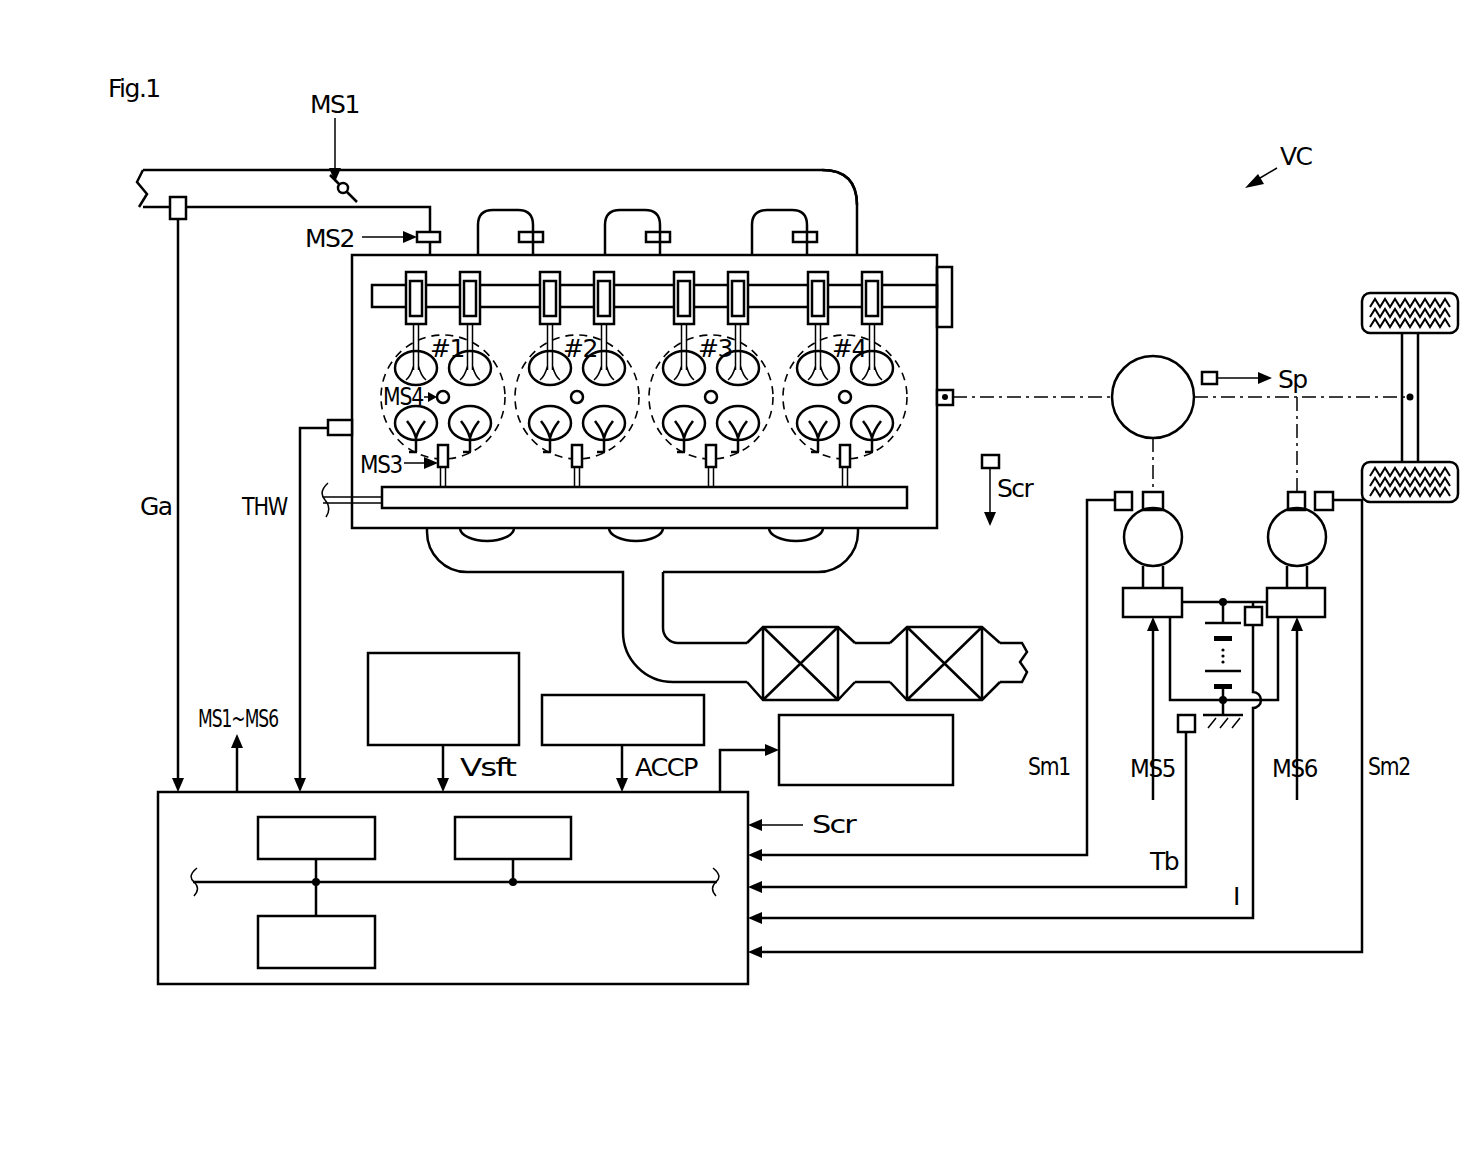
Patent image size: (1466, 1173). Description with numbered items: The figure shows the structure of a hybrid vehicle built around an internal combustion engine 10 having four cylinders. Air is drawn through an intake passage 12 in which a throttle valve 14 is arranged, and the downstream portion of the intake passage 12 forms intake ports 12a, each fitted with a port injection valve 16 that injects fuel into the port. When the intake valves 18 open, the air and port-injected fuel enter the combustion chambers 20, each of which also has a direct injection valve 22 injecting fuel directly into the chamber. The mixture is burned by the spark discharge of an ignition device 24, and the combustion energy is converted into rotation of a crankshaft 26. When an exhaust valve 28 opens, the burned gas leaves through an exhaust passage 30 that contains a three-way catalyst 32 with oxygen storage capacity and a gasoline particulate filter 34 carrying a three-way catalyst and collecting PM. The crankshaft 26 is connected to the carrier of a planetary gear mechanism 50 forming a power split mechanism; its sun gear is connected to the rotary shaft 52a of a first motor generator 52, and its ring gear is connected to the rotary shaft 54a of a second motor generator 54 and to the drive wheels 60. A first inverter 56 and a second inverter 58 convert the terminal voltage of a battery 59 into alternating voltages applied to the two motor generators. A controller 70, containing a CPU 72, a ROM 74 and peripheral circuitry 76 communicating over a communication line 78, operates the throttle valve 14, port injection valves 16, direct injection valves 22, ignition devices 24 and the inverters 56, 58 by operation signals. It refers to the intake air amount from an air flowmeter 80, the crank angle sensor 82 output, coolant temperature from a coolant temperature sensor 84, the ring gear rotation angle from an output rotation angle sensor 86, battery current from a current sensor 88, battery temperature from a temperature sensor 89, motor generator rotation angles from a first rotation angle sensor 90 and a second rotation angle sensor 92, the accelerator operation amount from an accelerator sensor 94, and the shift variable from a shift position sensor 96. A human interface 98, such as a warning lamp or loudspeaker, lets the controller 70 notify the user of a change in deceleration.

The internal combustion engine 10 is at (946, 221).
The intake passage 12 is at (180, 170).
The intake port 12a is at (833, 178).
The throttle valve 14 is at (352, 192).
The port injection valve 16 is at (797, 232).
The intake valve 18 is at (411, 340).
The combustion chamber 20 is at (388, 373).
The direct injection valve 22 is at (448, 458).
The ignition device 24 is at (449, 397).
The crankshaft 26 is at (946, 406).
The exhaust valve 28 is at (481, 441).
The exhaust passage 30 is at (718, 572).
The three-way catalyst 32 is at (803, 622).
The gasoline particulate filter 34 is at (950, 622).
The planetary gear mechanism 50 is at (1155, 356).
The first motor generator 52 is at (1183, 536).
The rotary shaft of first motor generator 52a is at (1164, 494).
The second motor generator 54 is at (1325, 533).
The rotary shaft of second motor generator 54a is at (1294, 492).
The first inverter 56 is at (1124, 604).
The second inverter 58 is at (1326, 604).
The battery 59 is at (1241, 671).
The drive wheels 60 is at (1408, 503).
The controller 70 is at (340, 790).
The CPU 72 is at (377, 840).
The ROM 74 is at (573, 840).
The peripheral circuitry 76 is at (377, 943).
The communication line 78 is at (672, 880).
The air flowmeter 80 is at (173, 221).
The crank angle sensor 82 is at (1001, 460).
The coolant temperature sensor 84 is at (338, 420).
The output rotation angle sensor 86 is at (1212, 372).
The current sensor 88 is at (1254, 607).
The temperature sensor 89 is at (1196, 732).
The first rotation angle sensor 90 is at (1121, 492).
The second rotation angle sensor 92 is at (1326, 492).
The accelerator sensor 94 is at (596, 695).
The shift position sensor 96 is at (478, 652).
The human interface 98 is at (955, 750).